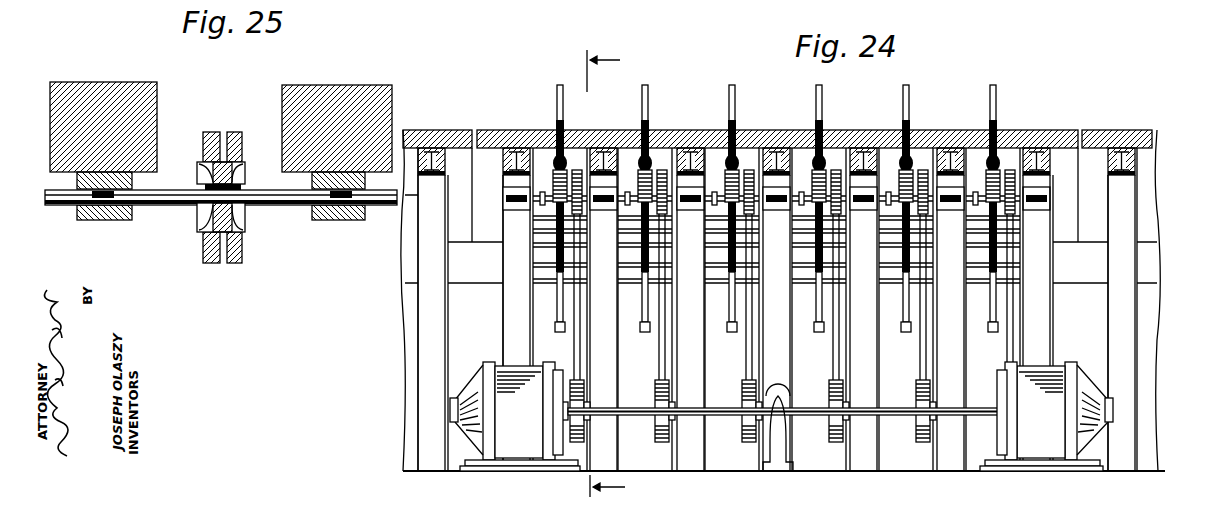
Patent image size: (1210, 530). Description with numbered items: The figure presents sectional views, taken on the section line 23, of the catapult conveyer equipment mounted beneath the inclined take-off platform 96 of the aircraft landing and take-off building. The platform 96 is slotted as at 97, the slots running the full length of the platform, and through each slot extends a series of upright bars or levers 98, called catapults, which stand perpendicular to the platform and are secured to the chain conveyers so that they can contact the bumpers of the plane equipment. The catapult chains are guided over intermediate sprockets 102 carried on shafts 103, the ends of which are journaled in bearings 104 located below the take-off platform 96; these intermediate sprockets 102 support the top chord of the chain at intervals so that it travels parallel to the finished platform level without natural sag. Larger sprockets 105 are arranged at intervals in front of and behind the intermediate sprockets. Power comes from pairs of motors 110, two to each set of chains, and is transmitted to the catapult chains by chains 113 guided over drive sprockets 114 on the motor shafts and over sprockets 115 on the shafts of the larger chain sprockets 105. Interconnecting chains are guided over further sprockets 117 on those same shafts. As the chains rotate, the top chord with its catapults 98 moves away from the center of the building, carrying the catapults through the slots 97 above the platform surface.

In FIG. 24, the section line 23— 23 is at (621, 270).
In FIG. 25, the take-off platform 96 is at (377, 93).
In FIG. 24, the take-off platform 96 is at (1147, 132).
In FIG. 25, the slot 97 is at (245, 93).
In FIG. 24, the slot 97 is at (1078, 132).
In FIG. 24, the upright bars or levers 98 is at (910, 118).
In FIG. 25, the intermediate sprocket 102 is at (202, 134).
In FIG. 25, the shaft 103 is at (163, 205).
In FIG. 25, the bearing 104 is at (318, 208).
In FIG. 24, the larger sprocket 105 is at (556, 162).
In FIG. 24, the motor 110 is at (1095, 360).
In FIG. 24, the chain 113 is at (808, 358).
In FIG. 24, the drive sprocket 114 is at (978, 447).
In FIG. 24, the sprocket 115 is at (974, 150).
In FIG. 24, the sprocket 117 is at (1018, 132).